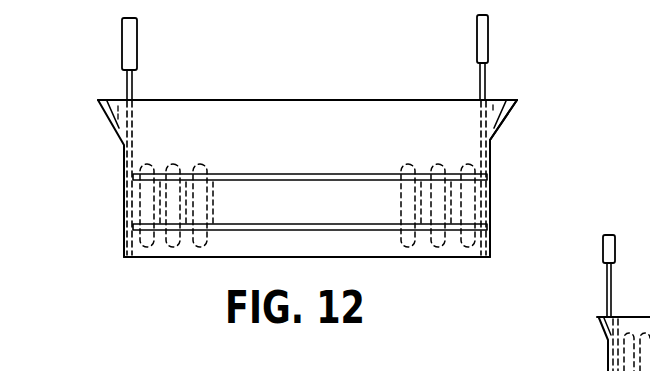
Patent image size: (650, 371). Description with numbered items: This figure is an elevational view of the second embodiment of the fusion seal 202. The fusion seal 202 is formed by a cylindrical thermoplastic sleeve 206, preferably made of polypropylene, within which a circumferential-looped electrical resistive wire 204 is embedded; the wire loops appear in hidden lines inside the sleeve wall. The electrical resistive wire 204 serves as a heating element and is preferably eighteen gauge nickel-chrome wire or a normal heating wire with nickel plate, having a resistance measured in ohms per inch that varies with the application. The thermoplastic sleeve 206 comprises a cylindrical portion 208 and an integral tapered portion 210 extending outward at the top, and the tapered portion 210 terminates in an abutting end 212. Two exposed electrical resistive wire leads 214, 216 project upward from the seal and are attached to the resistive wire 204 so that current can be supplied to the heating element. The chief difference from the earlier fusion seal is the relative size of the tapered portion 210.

In FIG. 12, the fusion seal 202 is at (140, 263).
In FIG. 13, the fusion seal 202 is at (608, 355).
In FIG. 12, the electrical resistive wire 204 is at (178, 163).
In FIG. 12, the thermoplastic sleeve 206 is at (124, 170).
In FIG. 12, the cylindrical portion 208 is at (490, 188).
In FIG. 12, the tapered portion 210 is at (496, 121).
In FIG. 12, the abutting end 212 is at (507, 99).
In FIG. 12, the electrical resistive wire lead 214 is at (122, 42).
In FIG. 13, the electrical resistive wire lead 214 is at (607, 282).
In FIG. 12, the electrical resistive wire lead 216 is at (489, 42).